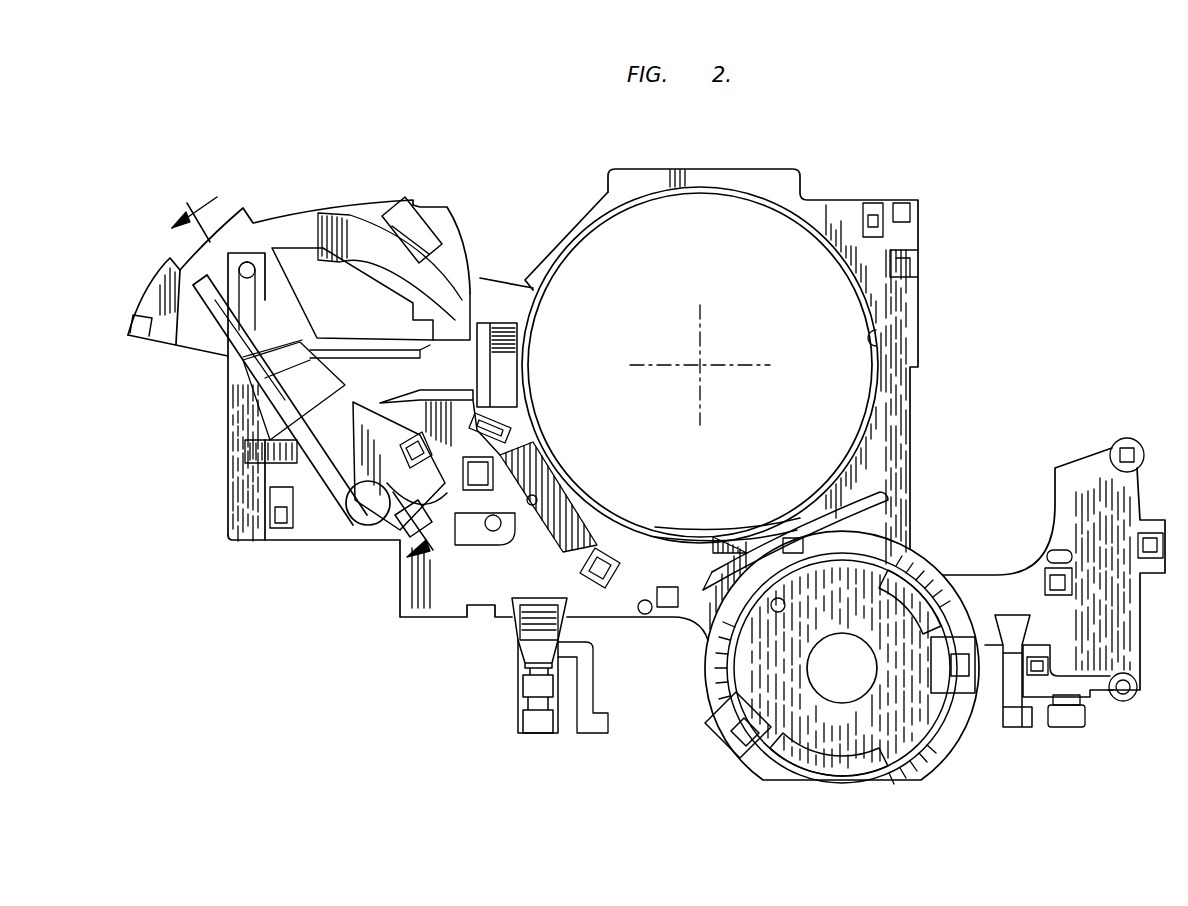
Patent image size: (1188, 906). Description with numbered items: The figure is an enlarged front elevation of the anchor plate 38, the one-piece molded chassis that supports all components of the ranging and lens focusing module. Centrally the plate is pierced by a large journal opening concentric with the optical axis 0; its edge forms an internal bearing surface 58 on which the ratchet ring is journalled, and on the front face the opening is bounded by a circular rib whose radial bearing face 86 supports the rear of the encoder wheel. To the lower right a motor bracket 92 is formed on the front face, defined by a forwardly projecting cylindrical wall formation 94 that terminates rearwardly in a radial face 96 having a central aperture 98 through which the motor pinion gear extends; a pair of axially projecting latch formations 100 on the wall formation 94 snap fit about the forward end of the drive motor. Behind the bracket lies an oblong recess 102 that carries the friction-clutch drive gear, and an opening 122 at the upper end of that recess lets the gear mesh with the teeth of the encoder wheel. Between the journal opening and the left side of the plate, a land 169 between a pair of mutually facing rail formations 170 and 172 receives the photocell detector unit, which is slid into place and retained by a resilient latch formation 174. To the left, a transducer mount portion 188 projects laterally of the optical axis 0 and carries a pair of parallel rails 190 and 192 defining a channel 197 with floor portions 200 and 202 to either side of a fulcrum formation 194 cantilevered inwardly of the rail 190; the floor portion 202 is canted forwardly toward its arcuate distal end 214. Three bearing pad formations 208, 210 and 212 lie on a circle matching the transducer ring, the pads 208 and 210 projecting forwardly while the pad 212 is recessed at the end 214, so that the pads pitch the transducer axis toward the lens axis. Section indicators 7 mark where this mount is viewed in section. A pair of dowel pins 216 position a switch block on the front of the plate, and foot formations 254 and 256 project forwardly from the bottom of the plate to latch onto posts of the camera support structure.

The anchor plate 38 is at (888, 167).
The internal bearing surface 58 is at (874, 345).
The radial bearing face 86 is at (882, 386).
The optical axis 0 is at (704, 362).
The transducer mount portion 188 is at (308, 188).
The channel 197 is at (221, 290).
The bearing pad formation 208 is at (142, 332).
The bearing pad formation 210 is at (402, 240).
The floor portion 200 is at (268, 318).
The rail 192 is at (310, 322).
The resilient latch formation 174 is at (420, 346).
The rail formation 170 is at (441, 345).
The land 169 is at (503, 325).
The rail formation 172 is at (437, 390).
The floor portion 202 is at (375, 432).
The rail 190 is at (240, 347).
The fulcrum formation 194 is at (290, 402).
The distal end of floor portion 214 is at (385, 535).
The bearing pad formation 212 is at (397, 553).
The section line 7- 7 is at (298, 389).
The dowel pins 216 is at (493, 531).
The opening 122 is at (745, 545).
The oblong recess 102 is at (814, 557).
The motor bracket 92 is at (939, 790).
The cylindrical wall formation 94 is at (928, 578).
The radial face 96 is at (840, 629).
The central aperture 98 is at (836, 703).
The latch formations 100 is at (950, 662).
The foot formation 254 is at (566, 720).
The foot formation 256 is at (1071, 728).